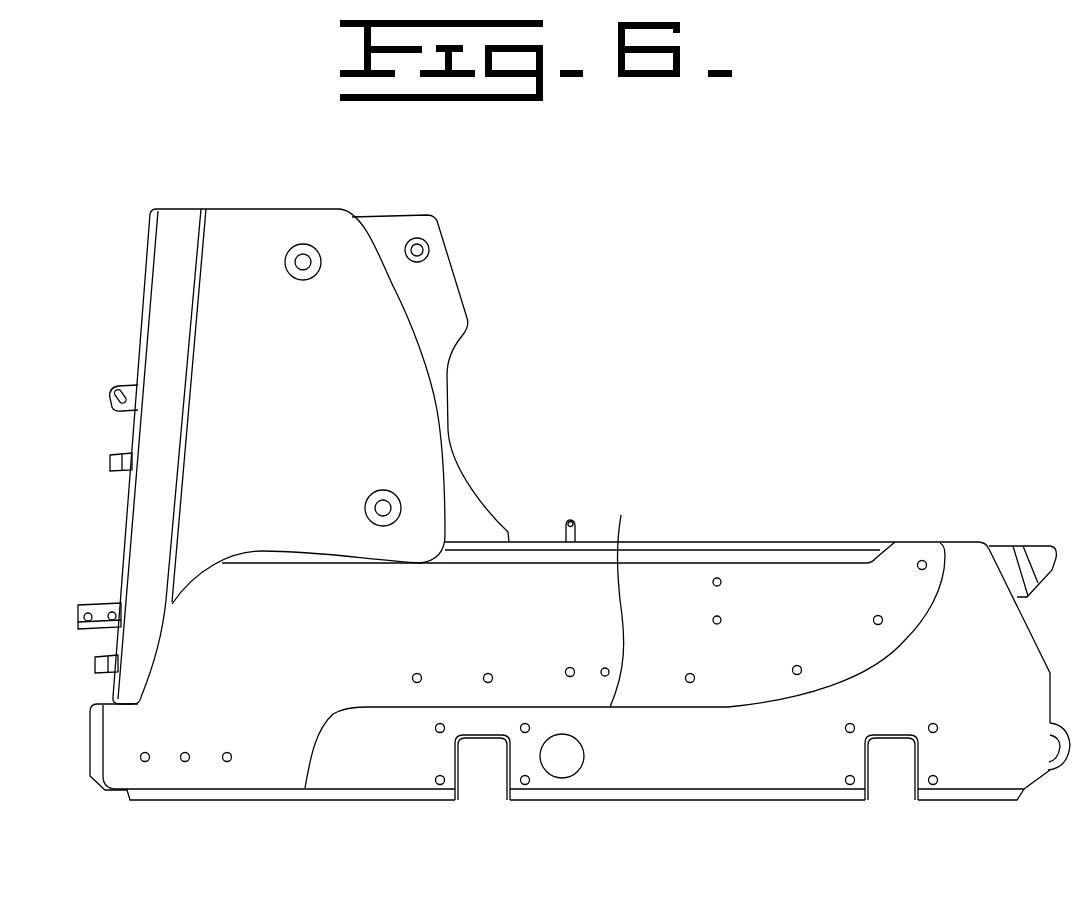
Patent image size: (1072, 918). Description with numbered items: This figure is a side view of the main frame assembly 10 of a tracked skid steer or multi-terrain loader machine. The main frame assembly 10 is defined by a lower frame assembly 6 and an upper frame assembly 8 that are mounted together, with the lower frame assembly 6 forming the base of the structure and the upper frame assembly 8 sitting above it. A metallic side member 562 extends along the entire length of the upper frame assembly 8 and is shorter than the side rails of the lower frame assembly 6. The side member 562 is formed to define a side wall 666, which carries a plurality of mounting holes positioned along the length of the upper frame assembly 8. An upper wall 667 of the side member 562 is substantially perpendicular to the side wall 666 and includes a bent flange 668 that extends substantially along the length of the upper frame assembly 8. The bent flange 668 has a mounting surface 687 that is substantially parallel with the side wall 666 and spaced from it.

The main frame assembly 10 is at (630, 264).
The lower frame assembly 6 is at (743, 760).
The upper frame assembly 8 is at (688, 589).
The side member 562 is at (753, 592).
The side wall 666 is at (621, 515).
The upper wall 667 is at (836, 542).
The bent flange 668 is at (869, 554).
The mounting surface 687 is at (593, 542).